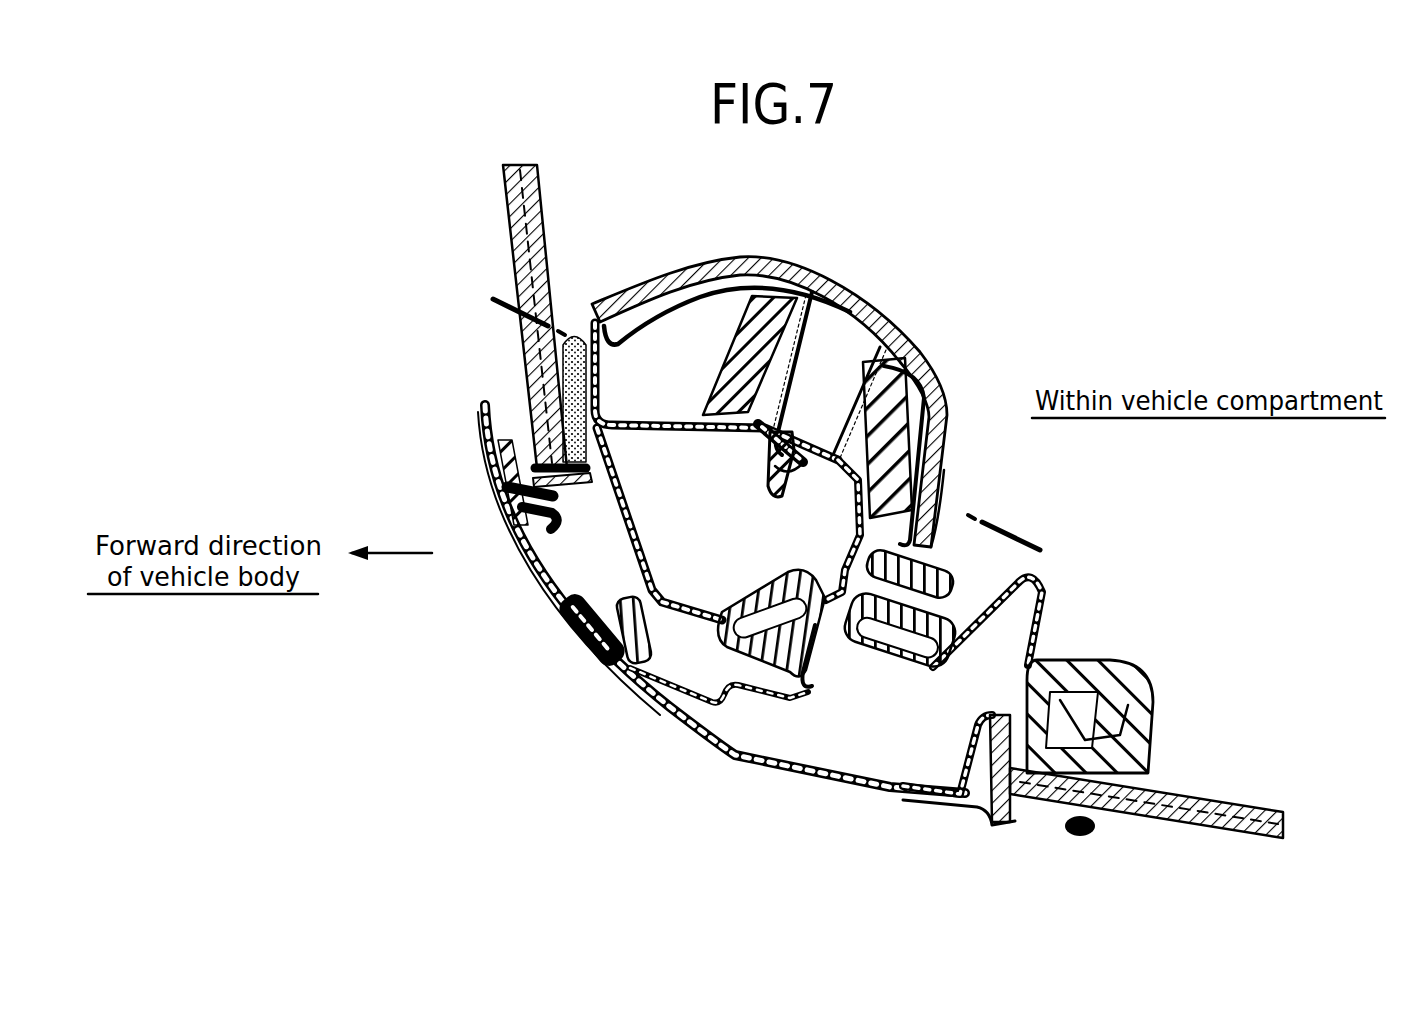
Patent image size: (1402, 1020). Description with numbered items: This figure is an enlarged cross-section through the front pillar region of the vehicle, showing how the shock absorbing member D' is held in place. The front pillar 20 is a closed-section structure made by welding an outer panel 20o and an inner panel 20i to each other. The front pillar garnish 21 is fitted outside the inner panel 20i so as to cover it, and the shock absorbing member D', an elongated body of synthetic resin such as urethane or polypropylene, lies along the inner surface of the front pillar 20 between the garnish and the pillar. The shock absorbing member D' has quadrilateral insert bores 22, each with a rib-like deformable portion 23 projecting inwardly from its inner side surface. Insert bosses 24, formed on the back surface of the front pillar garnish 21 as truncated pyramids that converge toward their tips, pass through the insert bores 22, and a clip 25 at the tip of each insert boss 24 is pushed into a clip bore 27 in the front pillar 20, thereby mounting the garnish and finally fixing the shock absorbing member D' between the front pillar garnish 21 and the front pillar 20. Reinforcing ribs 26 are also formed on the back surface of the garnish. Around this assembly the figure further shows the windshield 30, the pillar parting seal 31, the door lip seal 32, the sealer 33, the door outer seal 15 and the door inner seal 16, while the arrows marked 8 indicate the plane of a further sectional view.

The section line VIII-VIII 8 is at (488, 310).
The door outer seal 15 is at (815, 684).
The door inner seal 16 is at (950, 580).
The front pillar 20 is at (658, 436).
The outer panel 20o is at (622, 506).
The inner panel 20i is at (840, 548).
The front pillar garnish 21 is at (712, 265).
The insert bore 22 is at (745, 347).
The deformable portion 23 is at (800, 362).
The insert boss 24 is at (770, 434).
The clip 25 is at (790, 480).
The reinforcing rib 26 is at (740, 283).
The clip bore 27 is at (782, 460).
The front pane 30 is at (505, 216).
The pillar parting seal 31 is at (513, 503).
The door lip seal 32 is at (650, 630).
The sealer 33 is at (560, 366).
The shock absorbing member D' is at (965, 441).